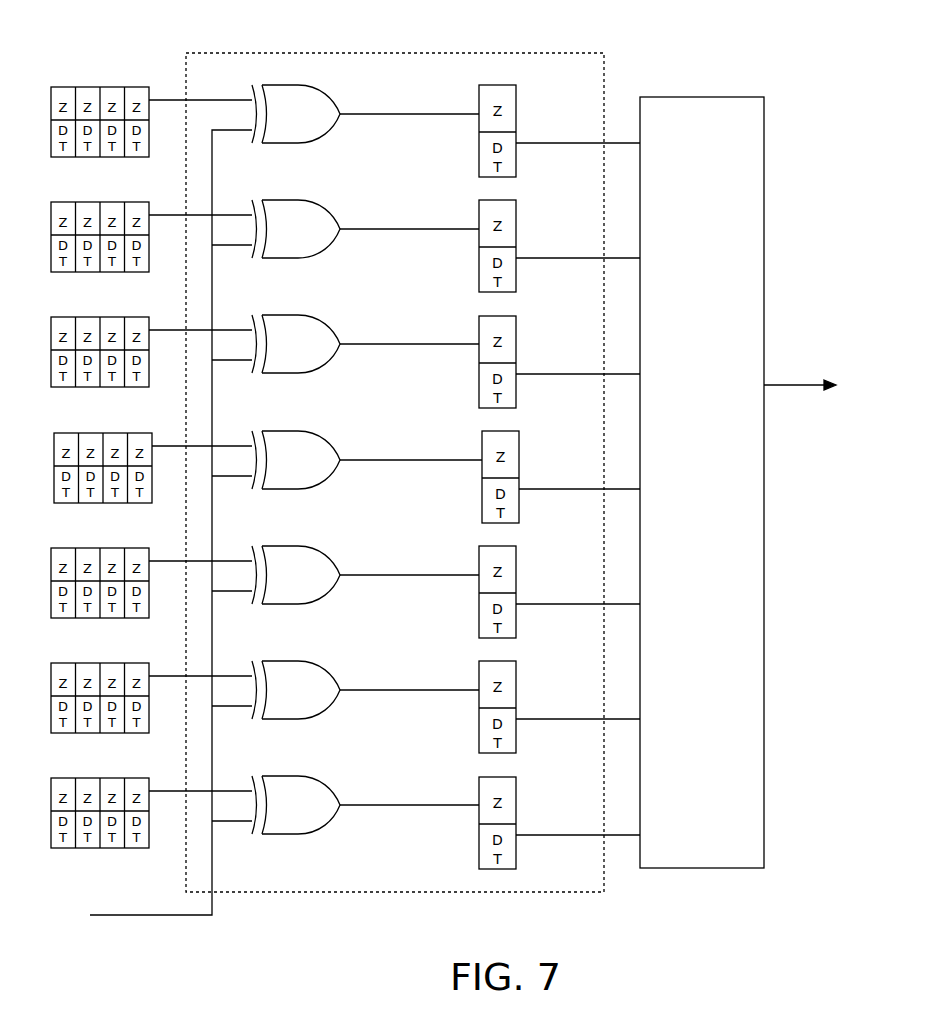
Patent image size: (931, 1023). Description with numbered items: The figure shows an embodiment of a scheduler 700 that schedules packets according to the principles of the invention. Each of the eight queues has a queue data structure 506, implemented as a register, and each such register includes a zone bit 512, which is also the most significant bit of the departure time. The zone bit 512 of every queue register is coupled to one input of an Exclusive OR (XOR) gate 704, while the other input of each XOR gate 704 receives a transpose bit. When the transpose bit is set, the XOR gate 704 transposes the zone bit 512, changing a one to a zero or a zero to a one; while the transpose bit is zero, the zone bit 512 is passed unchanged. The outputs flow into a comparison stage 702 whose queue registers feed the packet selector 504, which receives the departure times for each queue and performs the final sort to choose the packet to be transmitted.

The scheduler 700 is at (760, 73).
The zone bit 512 is at (149, 88).
The comparison stage 702 is at (395, 472).
The Exclusive OR (XOR) gate 704 is at (336, 98).
The queue data structure 506 is at (517, 104).
The packet selector 504 is at (702, 482).